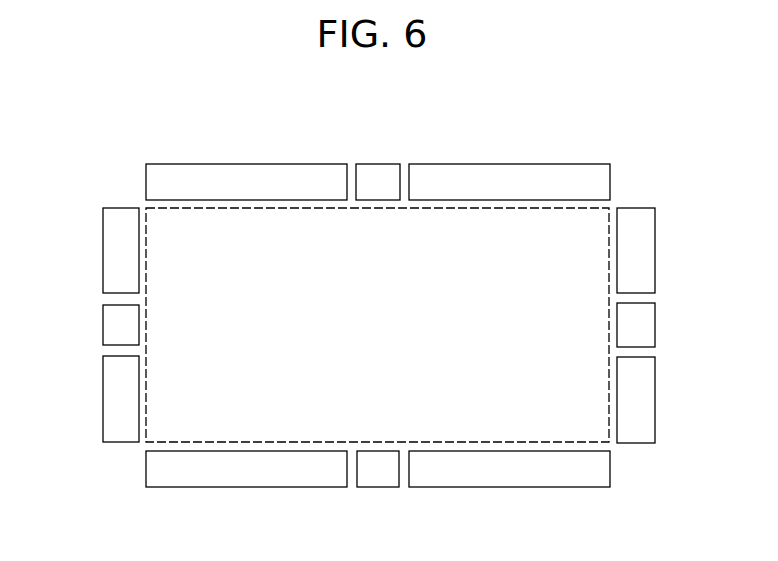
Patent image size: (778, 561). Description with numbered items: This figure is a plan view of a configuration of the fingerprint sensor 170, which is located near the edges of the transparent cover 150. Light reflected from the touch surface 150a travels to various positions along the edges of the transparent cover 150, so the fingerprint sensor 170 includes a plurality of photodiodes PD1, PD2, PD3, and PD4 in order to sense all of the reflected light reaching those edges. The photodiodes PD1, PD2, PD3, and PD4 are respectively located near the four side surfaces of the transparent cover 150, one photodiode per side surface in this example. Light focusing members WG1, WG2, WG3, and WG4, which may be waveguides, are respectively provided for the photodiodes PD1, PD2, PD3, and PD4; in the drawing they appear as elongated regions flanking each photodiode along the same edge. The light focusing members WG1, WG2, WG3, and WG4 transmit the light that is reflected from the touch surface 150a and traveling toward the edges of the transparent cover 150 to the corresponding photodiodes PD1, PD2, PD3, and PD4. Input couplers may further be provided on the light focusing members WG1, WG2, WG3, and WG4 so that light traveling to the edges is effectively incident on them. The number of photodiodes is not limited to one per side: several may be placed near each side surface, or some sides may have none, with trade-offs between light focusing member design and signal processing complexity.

The fingerprint sensor 170 is at (672, 148).
The transparent cover 150 is at (589, 208).
The touch surface 150a is at (537, 225).
The light focusing member WG1 is at (645, 251).
The light focusing member WG2 is at (246, 168).
The light focusing member WG3 is at (112, 251).
The light focusing member WG4 is at (245, 475).
The photodiode PD1 is at (645, 323).
The photodiode PD2 is at (377, 170).
The photodiode PD3 is at (112, 325).
The photodiode PD4 is at (378, 475).